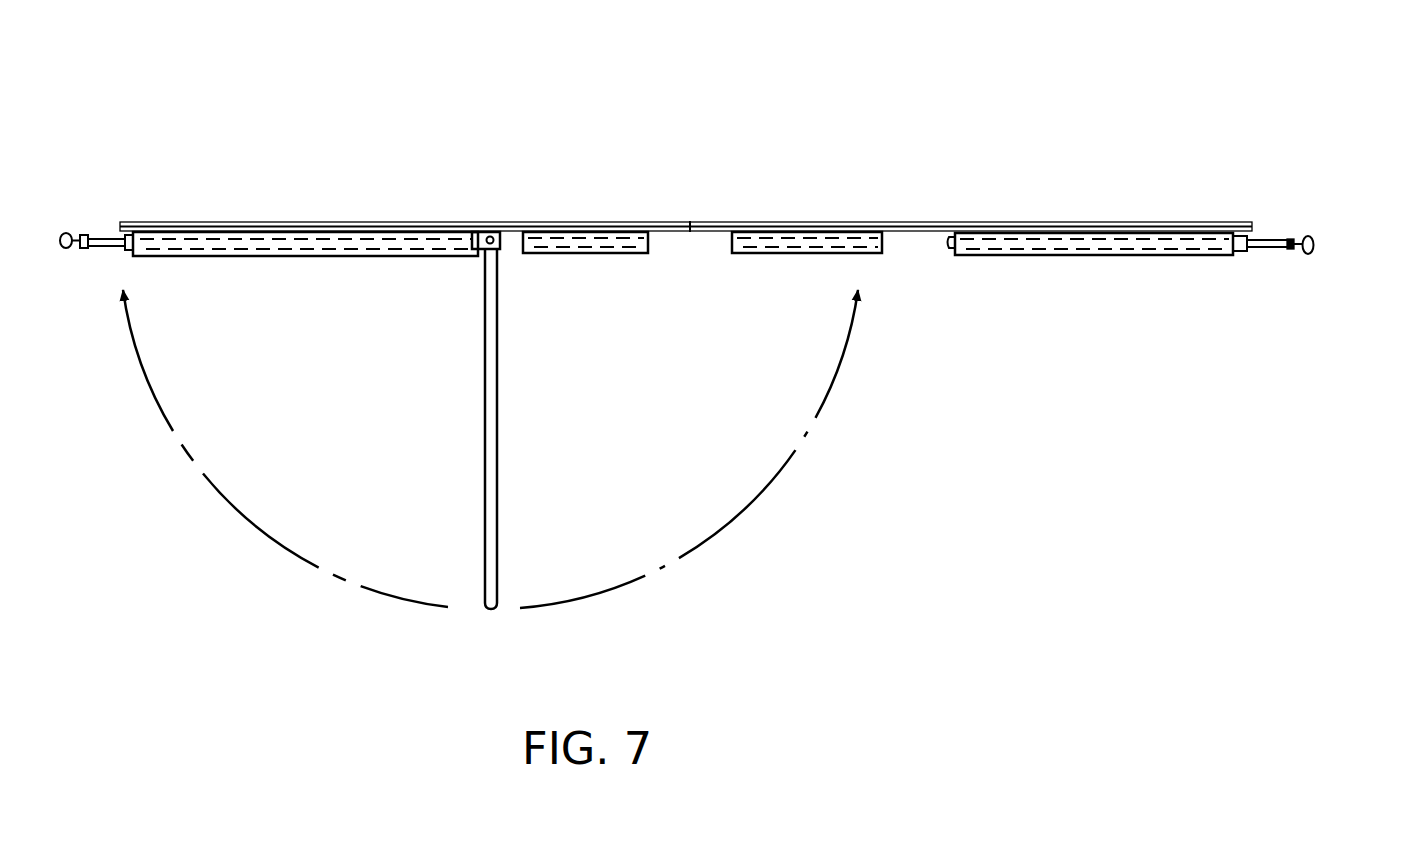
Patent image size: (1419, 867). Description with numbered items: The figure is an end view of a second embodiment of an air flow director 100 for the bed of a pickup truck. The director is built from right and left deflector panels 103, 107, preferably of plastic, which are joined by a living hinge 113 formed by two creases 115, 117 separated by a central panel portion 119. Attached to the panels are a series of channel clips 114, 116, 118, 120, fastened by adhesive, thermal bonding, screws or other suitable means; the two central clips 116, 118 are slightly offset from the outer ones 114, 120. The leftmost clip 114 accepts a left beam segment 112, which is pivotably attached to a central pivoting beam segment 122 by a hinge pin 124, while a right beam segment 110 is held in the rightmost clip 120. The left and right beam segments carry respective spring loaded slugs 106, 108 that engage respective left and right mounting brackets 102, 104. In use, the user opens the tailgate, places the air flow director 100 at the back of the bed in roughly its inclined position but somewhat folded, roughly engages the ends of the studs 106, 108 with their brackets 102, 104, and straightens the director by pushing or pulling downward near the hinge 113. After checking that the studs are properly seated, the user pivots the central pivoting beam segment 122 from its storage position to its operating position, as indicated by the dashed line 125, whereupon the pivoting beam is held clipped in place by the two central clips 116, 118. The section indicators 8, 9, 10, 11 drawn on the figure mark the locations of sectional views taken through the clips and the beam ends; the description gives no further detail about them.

The air flow director 100 is at (1032, 112).
The left mounting bracket 102 is at (70, 232).
The right deflector panel 103 is at (1026, 222).
The right mounting bracket 104 is at (1316, 243).
The spring loaded slug 106 is at (106, 249).
The left deflector panel 107 is at (236, 222).
The spring loaded slug 108 is at (1266, 238).
The right beam segment 110 is at (950, 250).
The left beam segment 112 is at (480, 250).
The living hinge 113 is at (826, 138).
The channel clip 114 is at (306, 257).
The crease 115 is at (668, 222).
The channel clip 116 is at (616, 254).
The crease 117 is at (726, 222).
The channel clip 118 is at (787, 254).
The central panel portion 119 is at (690, 222).
The channel clip 120 is at (1046, 256).
The central pivoting beam segment 122 is at (498, 466).
The hinge pin 124 is at (490, 232).
The dashed line 125 is at (228, 506).
The section line 8- 8 is at (1193, 340).
The section line 9- 9 is at (1285, 208).
The section line 10- 10 is at (498, 161).
The section line 11- 11 is at (1316, 175).